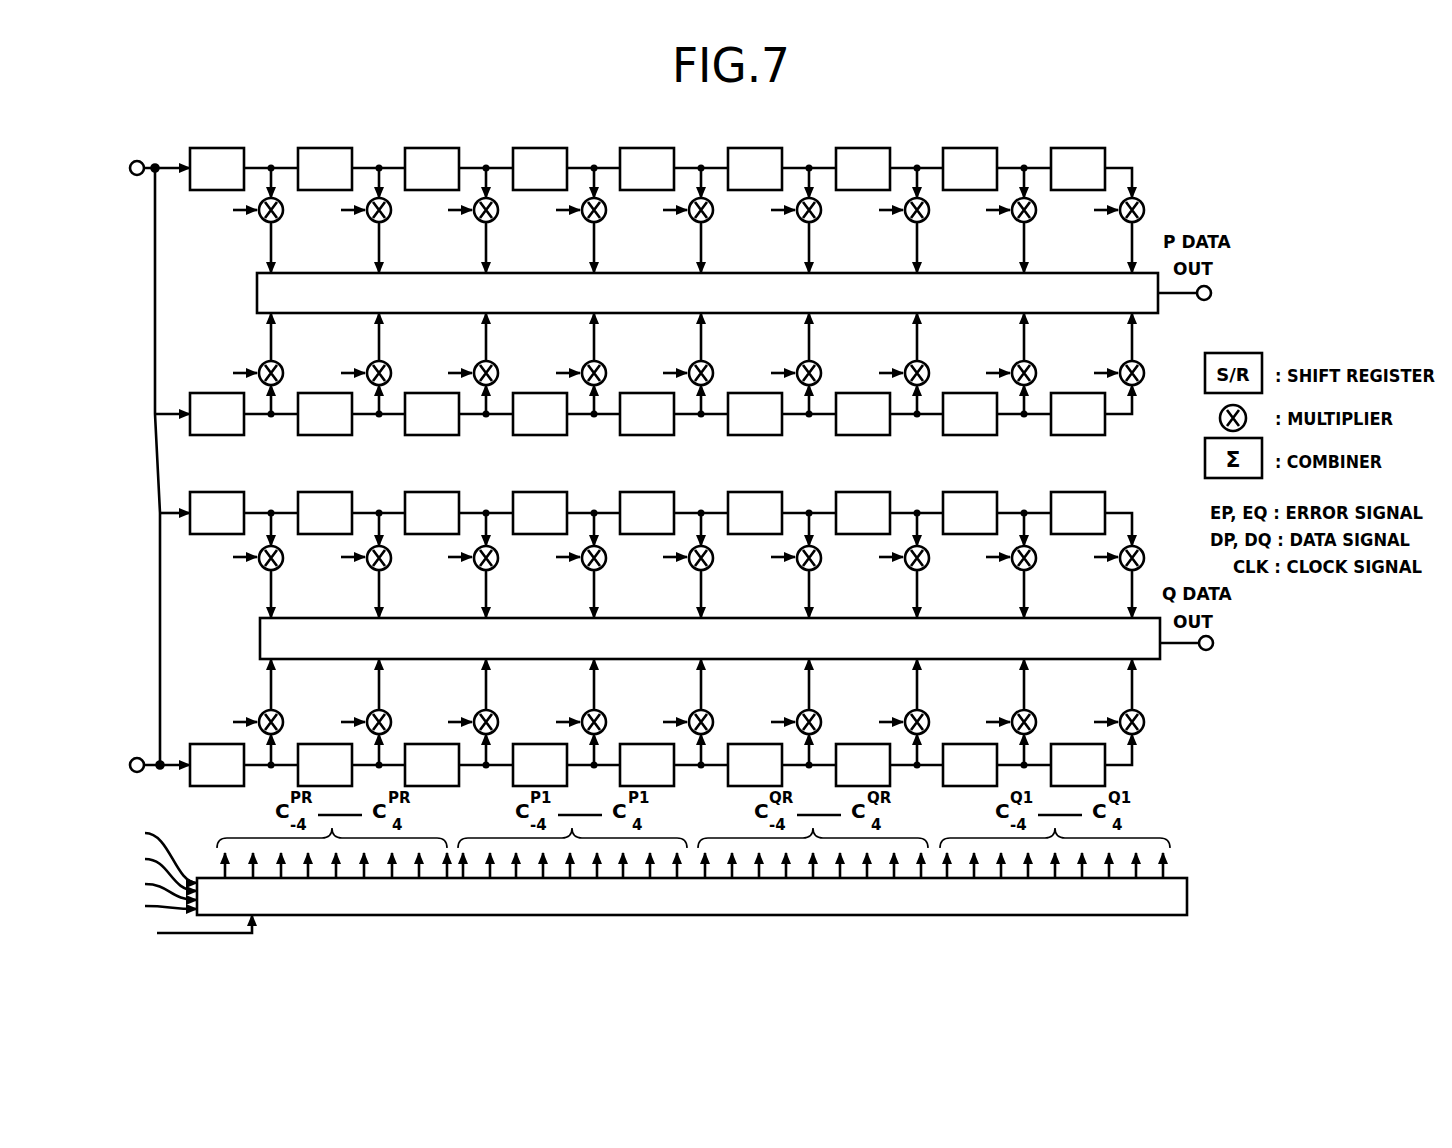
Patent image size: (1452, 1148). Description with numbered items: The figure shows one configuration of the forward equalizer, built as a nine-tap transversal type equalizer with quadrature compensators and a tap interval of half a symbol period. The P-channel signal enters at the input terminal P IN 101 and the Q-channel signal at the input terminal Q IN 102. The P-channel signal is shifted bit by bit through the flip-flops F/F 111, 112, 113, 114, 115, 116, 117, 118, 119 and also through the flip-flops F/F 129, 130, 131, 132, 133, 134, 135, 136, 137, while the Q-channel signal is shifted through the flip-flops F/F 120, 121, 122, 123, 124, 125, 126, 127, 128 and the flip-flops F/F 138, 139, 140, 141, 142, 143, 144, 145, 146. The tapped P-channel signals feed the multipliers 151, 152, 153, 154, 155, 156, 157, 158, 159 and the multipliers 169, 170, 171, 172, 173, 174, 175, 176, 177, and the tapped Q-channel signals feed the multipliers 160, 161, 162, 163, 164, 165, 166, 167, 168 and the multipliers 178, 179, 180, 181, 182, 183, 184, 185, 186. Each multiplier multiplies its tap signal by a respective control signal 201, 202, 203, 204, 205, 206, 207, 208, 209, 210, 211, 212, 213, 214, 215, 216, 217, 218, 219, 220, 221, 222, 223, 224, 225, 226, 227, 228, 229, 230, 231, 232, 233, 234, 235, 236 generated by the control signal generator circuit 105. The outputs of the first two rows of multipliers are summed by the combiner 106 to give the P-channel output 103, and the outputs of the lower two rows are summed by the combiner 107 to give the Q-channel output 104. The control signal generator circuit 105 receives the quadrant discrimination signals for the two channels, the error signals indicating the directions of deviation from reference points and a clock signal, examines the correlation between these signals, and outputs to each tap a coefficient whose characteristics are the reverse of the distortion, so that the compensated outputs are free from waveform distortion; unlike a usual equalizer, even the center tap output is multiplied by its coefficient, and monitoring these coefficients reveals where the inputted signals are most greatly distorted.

The input terminal P IN 101 is at (137, 176).
The input terminal Q IN 102 is at (137, 773).
The P-channel output 103 is at (1211, 299).
The Q-channel output 104 is at (1212, 650).
The control signal generator circuit 105 is at (1188, 893).
The combiner 106 is at (1160, 313).
The combiner 107 is at (1160, 660).
The flip-flop F/F 111 is at (232, 148).
The flip-flop F/F 112 is at (340, 148).
The flip-flop F/F 113 is at (447, 148).
The flip-flop F/F 114 is at (555, 148).
The flip-flop F/F 115 is at (662, 148).
The flip-flop F/F 116 is at (770, 148).
The flip-flop F/F 117 is at (878, 148).
The flip-flop F/F 118 is at (985, 148).
The flip-flop F/F 119 is at (1093, 148).
The flip-flop F/F 120 is at (217, 435).
The flip-flop F/F 121 is at (325, 435).
The flip-flop F/F 122 is at (432, 435).
The flip-flop F/F 123 is at (540, 435).
The flip-flop F/F 124 is at (647, 435).
The flip-flop F/F 125 is at (755, 435).
The flip-flop F/F 126 is at (863, 435).
The flip-flop F/F 127 is at (970, 435).
The flip-flop F/F 128 is at (1078, 435).
The flip-flop F/F 129 is at (208, 492).
The flip-flop F/F 130 is at (316, 492).
The flip-flop F/F 131 is at (423, 492).
The flip-flop F/F 132 is at (531, 492).
The flip-flop F/F 133 is at (638, 492).
The flip-flop F/F 134 is at (746, 492).
The flip-flop F/F 135 is at (854, 492).
The flip-flop F/F 136 is at (961, 492).
The flip-flop F/F 137 is at (1069, 492).
The flip-flop F/F 138 is at (187, 778).
The flip-flop F/F 139 is at (298, 786).
The flip-flop F/F 140 is at (405, 786).
The flip-flop F/F 141 is at (513, 786).
The flip-flop F/F 142 is at (620, 786).
The flip-flop F/F 143 is at (728, 786).
The flip-flop F/F 144 is at (836, 786).
The flip-flop F/F 145 is at (943, 786).
The flip-flop F/F 146 is at (1051, 786).
The multiplier 151 is at (263, 222).
The multiplier 152 is at (371, 222).
The multiplier 153 is at (478, 222).
The multiplier 154 is at (586, 222).
The multiplier 155 is at (693, 222).
The multiplier 156 is at (801, 222).
The multiplier 157 is at (909, 222).
The multiplier 158 is at (1016, 222).
The multiplier 159 is at (1124, 222).
The multiplier 160 is at (281, 361).
The multiplier 161 is at (389, 361).
The multiplier 162 is at (496, 361).
The multiplier 163 is at (604, 361).
The multiplier 164 is at (711, 361).
The multiplier 165 is at (819, 361).
The multiplier 166 is at (927, 361).
The multiplier 167 is at (1034, 361).
The multiplier 168 is at (1144, 380).
The multiplier 169 is at (263, 570).
The multiplier 170 is at (371, 570).
The multiplier 171 is at (478, 570).
The multiplier 172 is at (586, 570).
The multiplier 173 is at (693, 570).
The multiplier 174 is at (801, 570).
The multiplier 175 is at (909, 570).
The multiplier 176 is at (1016, 570).
The multiplier 177 is at (1124, 570).
The multiplier 178 is at (281, 710).
The multiplier 179 is at (389, 710).
The multiplier 180 is at (496, 710).
The multiplier 181 is at (604, 710).
The multiplier 182 is at (711, 710).
The multiplier 183 is at (819, 710).
The multiplier 184 is at (927, 710).
The multiplier 185 is at (1034, 710).
The multiplier 186 is at (1144, 730).
The control signal 201 is at (207, 238).
The control signal 202 is at (396, 247).
The control signal 203 is at (503, 247).
The control signal 204 is at (611, 247).
The control signal 205 is at (718, 247).
The control signal 206 is at (826, 247).
The control signal 207 is at (934, 247).
The control signal 208 is at (1041, 247).
The control signal 209 is at (1149, 247).
The control signal 210 is at (229, 366).
The control signal 211 is at (337, 366).
The control signal 212 is at (444, 366).
The control signal 213 is at (552, 366).
The control signal 214 is at (659, 366).
The control signal 215 is at (767, 366).
The control signal 216 is at (875, 366).
The control signal 217 is at (982, 366).
The control signal 218 is at (1090, 366).
The control signal 219 is at (205, 580).
The control signal 220 is at (398, 594).
The control signal 221 is at (505, 594).
The control signal 222 is at (613, 594).
The control signal 223 is at (720, 594).
The control signal 224 is at (828, 594).
The control signal 225 is at (936, 594).
The control signal 226 is at (1043, 594).
The control signal 227 is at (1151, 594).
The control signal 228 is at (229, 715).
The control signal 229 is at (337, 715).
The control signal 230 is at (444, 715).
The control signal 231 is at (552, 715).
The control signal 232 is at (659, 715).
The control signal 233 is at (767, 715).
The control signal 234 is at (875, 715).
The control signal 235 is at (982, 715).
The control signal 236 is at (1090, 715).